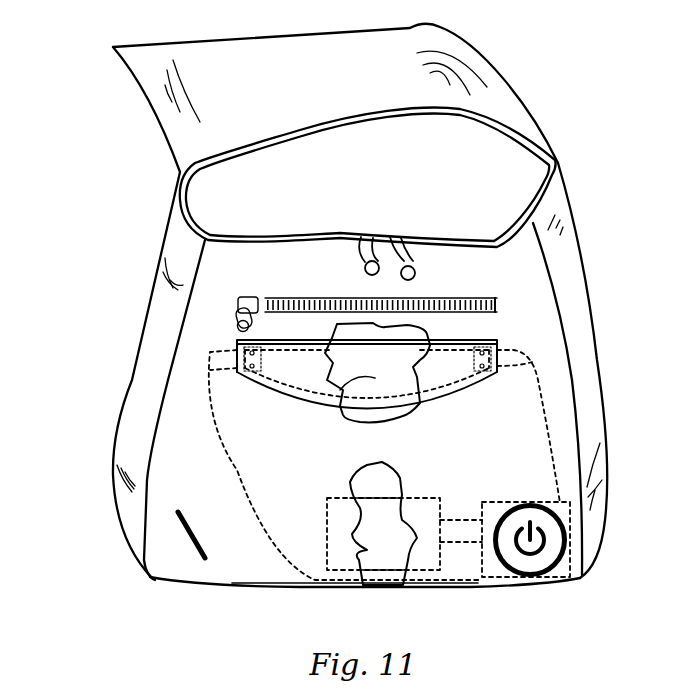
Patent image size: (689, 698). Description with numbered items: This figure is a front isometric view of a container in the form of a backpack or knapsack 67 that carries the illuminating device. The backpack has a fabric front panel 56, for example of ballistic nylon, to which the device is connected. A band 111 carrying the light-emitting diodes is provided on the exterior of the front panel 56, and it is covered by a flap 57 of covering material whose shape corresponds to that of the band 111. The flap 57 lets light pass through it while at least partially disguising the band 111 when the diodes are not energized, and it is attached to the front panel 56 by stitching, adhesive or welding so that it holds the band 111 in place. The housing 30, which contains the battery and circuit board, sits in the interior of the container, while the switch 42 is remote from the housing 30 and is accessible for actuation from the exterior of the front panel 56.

The housing 30 is at (388, 542).
The switch 42 is at (530, 563).
The front panel 56 is at (188, 532).
The flap 57 is at (445, 365).
The backpack or knapsack 67 is at (607, 592).
The band 111 is at (365, 373).